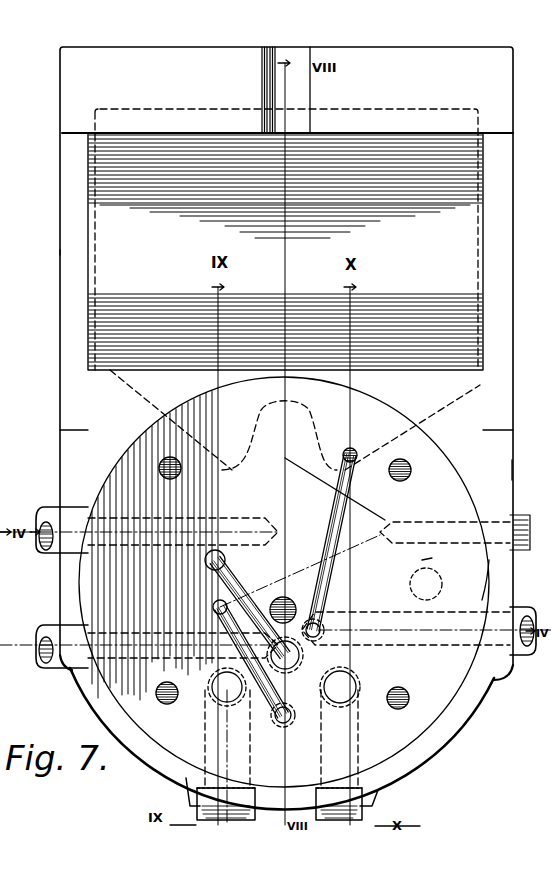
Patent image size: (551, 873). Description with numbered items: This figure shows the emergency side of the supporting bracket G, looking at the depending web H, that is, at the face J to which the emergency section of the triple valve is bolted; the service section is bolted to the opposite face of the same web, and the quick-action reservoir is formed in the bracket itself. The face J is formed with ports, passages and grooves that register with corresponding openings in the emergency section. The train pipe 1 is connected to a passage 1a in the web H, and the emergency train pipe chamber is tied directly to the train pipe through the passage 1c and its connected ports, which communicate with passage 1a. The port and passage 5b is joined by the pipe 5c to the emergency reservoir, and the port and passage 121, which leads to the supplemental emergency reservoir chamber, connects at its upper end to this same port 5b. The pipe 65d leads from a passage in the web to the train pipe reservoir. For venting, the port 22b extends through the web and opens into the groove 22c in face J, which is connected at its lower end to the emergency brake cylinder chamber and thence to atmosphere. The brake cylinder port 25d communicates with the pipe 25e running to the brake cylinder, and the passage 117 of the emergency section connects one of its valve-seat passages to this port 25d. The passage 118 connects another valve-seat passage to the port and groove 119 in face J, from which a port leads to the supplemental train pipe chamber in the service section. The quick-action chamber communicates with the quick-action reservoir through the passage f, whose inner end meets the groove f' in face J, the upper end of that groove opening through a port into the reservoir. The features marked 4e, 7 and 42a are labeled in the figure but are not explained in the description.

The supporting bracket G is at (60, 252).
The depending web H is at (498, 470).
The face of the web J is at (470, 578).
The train pipe 1 is at (520, 660).
The passage 1a is at (426, 584).
The passage 1c is at (298, 612).
The boss 4e is at (40, 665).
The port and passage 5b is at (355, 681).
The pipe 5c is at (378, 808).
The chamber 7 is at (430, 600).
The port 22b is at (213, 608).
The groove 22c is at (243, 648).
The port 25d is at (224, 692).
The pipe 25e is at (185, 803).
The port 42a is at (207, 564).
The pipe 65d is at (42, 508).
The passage 117 is at (211, 685).
The passage 118 is at (292, 663).
The port and groove 119 is at (240, 588).
The port and passage 121 is at (357, 690).
The passage f is at (341, 630).
The groove f' is at (326, 539).